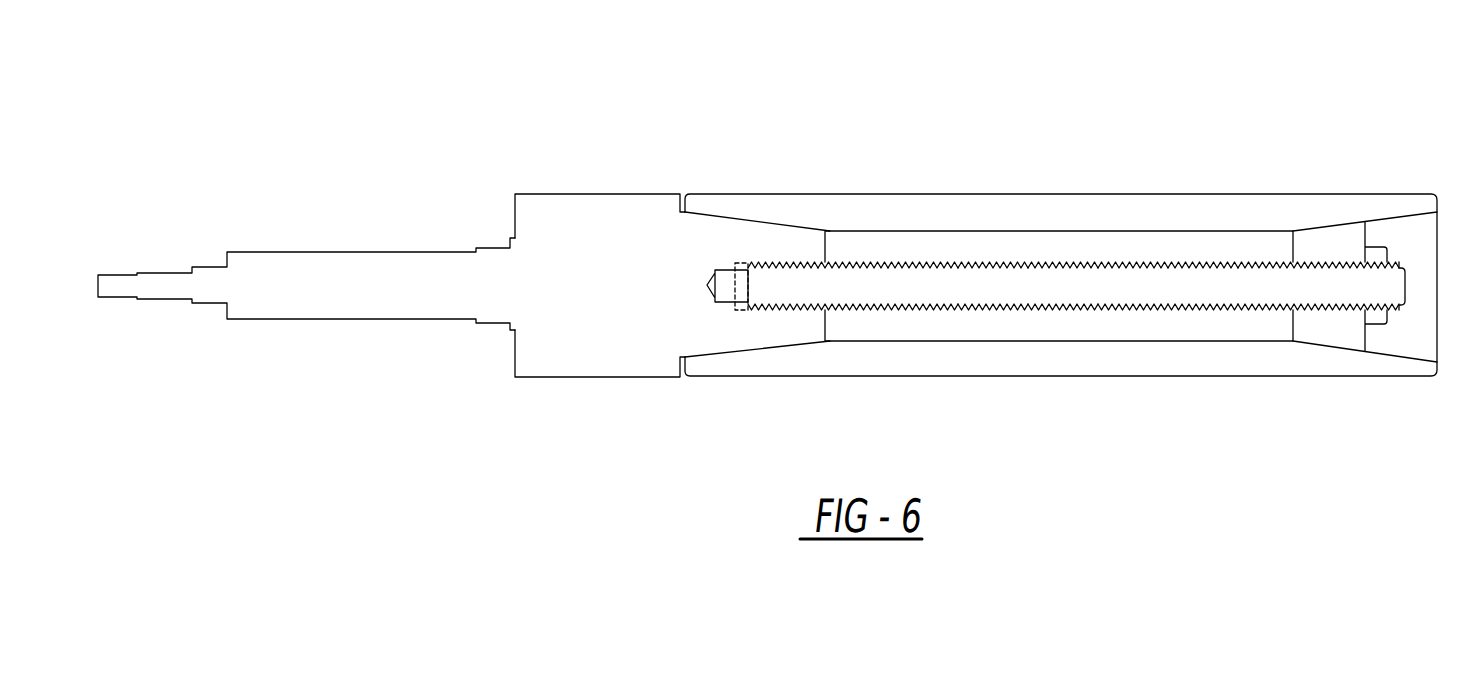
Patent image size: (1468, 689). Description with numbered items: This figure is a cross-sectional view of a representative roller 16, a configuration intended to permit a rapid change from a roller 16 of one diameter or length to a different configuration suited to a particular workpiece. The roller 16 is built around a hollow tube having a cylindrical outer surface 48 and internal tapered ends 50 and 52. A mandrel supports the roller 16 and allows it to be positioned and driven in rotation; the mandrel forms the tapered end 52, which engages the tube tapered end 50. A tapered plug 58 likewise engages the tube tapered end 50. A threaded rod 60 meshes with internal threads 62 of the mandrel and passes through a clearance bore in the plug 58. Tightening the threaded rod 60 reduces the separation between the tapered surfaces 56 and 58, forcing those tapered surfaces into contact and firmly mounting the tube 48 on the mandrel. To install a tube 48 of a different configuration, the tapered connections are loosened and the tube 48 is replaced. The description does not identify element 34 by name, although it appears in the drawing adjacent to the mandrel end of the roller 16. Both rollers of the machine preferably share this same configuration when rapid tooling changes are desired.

The roller 16 is at (460, 128).
The housing block 34 is at (578, 194).
The cylindrical outer surface 48 is at (973, 194).
The tube tapered end 50 is at (743, 221).
The tapered end 52 is at (1416, 214).
The tapered surface 56 is at (788, 232).
The tapered plug 58 is at (1322, 226).
The threaded rod 60 is at (1058, 262).
The internal threads 62 is at (768, 304).